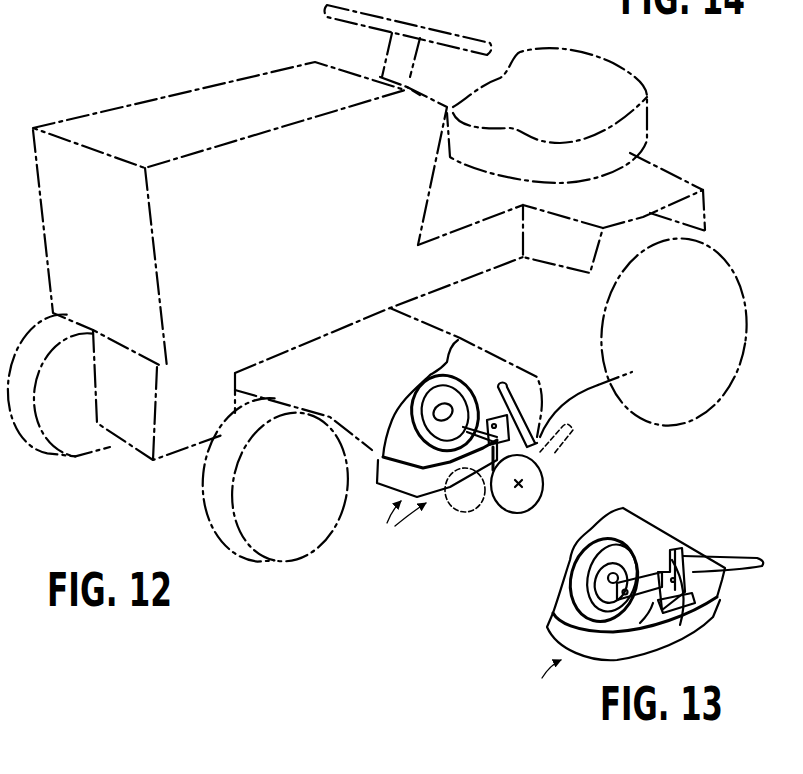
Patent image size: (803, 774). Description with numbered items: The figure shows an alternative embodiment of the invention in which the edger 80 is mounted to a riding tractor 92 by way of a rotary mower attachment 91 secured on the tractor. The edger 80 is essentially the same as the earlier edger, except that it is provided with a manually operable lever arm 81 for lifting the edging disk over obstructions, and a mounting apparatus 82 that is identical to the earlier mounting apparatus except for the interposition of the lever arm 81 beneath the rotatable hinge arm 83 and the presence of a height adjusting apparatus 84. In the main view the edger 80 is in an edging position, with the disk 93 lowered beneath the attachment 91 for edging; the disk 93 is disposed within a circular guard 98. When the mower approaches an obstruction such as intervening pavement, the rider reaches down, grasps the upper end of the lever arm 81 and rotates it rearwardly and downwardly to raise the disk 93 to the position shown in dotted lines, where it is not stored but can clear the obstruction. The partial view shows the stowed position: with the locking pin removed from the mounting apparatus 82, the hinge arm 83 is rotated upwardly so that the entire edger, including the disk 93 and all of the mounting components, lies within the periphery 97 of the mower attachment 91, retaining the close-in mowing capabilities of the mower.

In FIG. 12, the riding tractor 92 is at (266, 52).
In FIG. 12, the edger 80 is at (499, 368).
In FIG. 13, the edger 80 is at (669, 512).
In FIG. 12, the lever arm 81 is at (530, 385).
In FIG. 13, the lever arm 81 is at (713, 560).
In FIG. 12, the mounting apparatus 82 is at (499, 424).
In FIG. 13, the mounting apparatus 82 is at (657, 605).
In FIG. 13, the rotatable hinge arm 83 is at (675, 558).
In FIG. 12, the height adjusting apparatus 84 is at (540, 427).
In FIG. 12, the rotary mower attachment 91 is at (400, 475).
In FIG. 13, the rotary mower attachment 91 is at (567, 642).
In FIG. 12, the disk 93 is at (520, 513).
In FIG. 13, the disk 93 is at (600, 585).
In FIG. 12, the periphery 97 is at (452, 493).
In FIG. 13, the periphery 97 is at (672, 626).
In FIG. 12, the circular guard 98 is at (445, 362).
In FIG. 13, the circular guard 98 is at (600, 550).